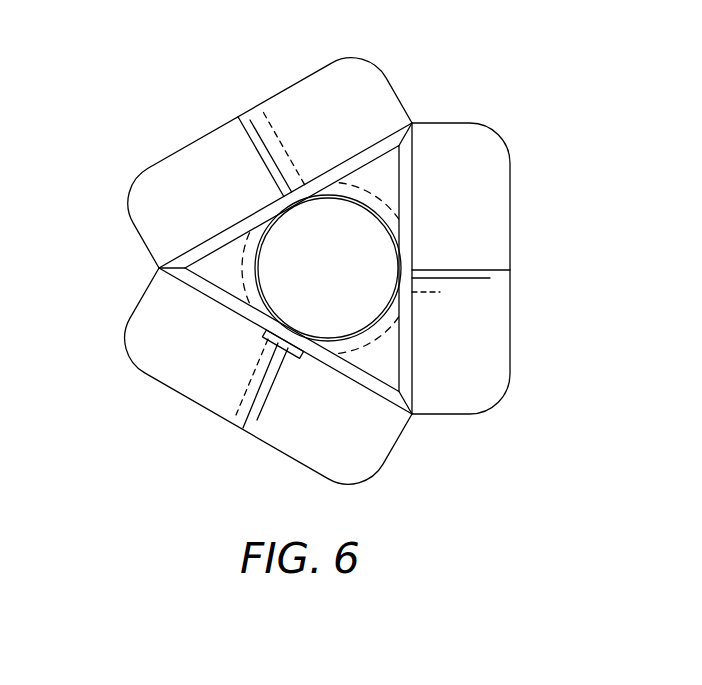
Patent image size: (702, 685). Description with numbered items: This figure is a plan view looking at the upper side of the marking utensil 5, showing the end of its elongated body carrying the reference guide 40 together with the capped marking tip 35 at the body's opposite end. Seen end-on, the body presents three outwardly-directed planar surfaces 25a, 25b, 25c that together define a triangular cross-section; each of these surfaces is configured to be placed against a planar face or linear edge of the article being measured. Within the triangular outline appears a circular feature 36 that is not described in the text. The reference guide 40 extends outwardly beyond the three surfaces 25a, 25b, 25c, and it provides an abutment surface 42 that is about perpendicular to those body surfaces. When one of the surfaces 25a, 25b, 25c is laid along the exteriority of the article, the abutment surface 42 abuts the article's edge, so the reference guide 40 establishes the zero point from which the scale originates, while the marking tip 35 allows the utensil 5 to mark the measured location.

The marking utensil 5 is at (133, 106).
The planar surface 25a is at (188, 372).
The planar surface 25b is at (316, 178).
The planar surface 25c is at (413, 173).
The marking tip 35 is at (303, 243).
The central bore 36 is at (363, 250).
The reference guide 40 is at (426, 434).
The abutment surface 42 is at (500, 343).